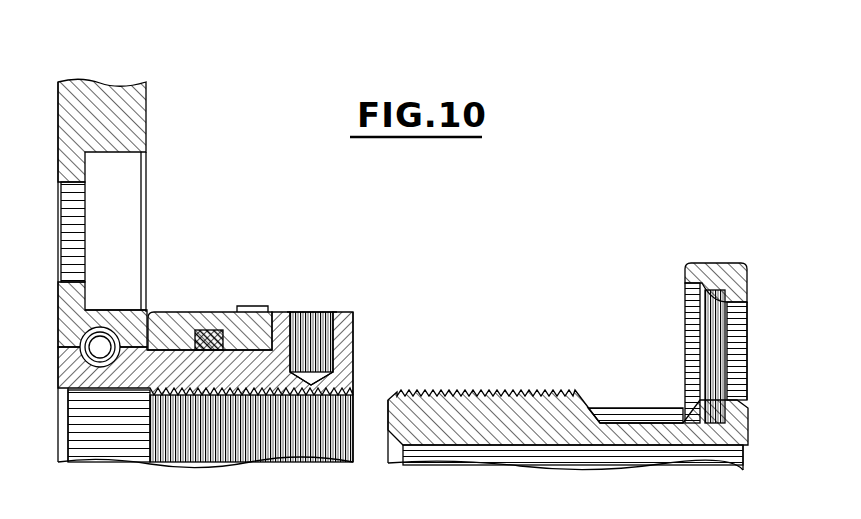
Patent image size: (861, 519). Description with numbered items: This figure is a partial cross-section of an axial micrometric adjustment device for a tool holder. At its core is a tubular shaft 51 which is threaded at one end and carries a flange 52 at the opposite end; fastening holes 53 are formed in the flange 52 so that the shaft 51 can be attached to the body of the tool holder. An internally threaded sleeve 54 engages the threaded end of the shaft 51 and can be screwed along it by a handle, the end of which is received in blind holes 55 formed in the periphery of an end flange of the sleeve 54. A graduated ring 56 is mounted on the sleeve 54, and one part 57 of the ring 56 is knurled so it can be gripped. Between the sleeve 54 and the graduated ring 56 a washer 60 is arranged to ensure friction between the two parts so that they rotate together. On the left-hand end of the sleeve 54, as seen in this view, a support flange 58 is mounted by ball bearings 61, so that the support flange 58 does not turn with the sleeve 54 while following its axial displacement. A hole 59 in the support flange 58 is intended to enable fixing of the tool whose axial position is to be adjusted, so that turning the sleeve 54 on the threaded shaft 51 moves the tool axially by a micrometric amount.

The tubular shaft 51 is at (490, 402).
The flange 52 is at (725, 268).
The fastening holes 53 is at (738, 323).
The internally threaded sleeve 54 is at (347, 348).
The blind holes 55 is at (307, 330).
The graduated ring 56 is at (167, 327).
The knurled part 57 is at (272, 303).
The support flange 58 is at (132, 122).
The hole 59 is at (72, 243).
The washer 60 is at (217, 328).
The ball bearings 61 is at (107, 342).